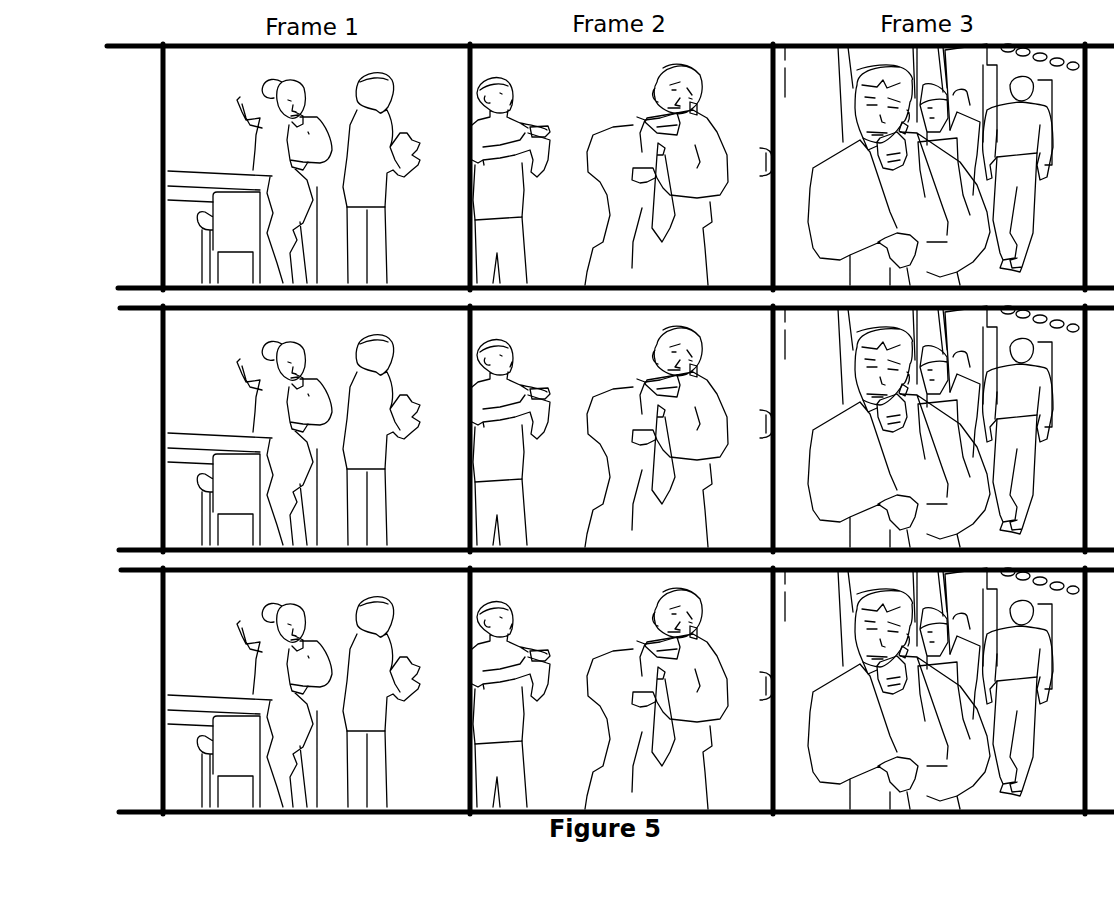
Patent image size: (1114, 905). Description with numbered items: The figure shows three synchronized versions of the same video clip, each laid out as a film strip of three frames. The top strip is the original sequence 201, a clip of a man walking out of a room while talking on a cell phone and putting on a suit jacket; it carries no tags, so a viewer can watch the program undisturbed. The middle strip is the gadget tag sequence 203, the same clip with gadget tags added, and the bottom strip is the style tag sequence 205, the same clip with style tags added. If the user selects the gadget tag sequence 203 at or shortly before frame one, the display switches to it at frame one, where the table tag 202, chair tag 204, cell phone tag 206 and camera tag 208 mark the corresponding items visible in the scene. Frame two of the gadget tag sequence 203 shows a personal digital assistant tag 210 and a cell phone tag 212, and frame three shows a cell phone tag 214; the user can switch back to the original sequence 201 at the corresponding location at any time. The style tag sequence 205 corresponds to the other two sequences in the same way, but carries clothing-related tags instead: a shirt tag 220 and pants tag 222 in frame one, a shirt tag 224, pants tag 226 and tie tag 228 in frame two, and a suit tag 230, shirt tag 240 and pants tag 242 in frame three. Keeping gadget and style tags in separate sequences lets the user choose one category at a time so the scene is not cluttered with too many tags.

The original sequence 201 is at (127, 58).
The gadget tag sequence 203 is at (127, 320).
The style tag sequence 205 is at (127, 582).
The table tag 202 is at (220, 427).
The chair tag 204 is at (228, 499).
The cell phone tag 206 is at (294, 432).
The camera tag 208 is at (400, 440).
The personal digital assistant (PDA) tag 210 is at (553, 363).
The cell phone tag 212 is at (701, 362).
The cell phone tag 214 is at (913, 422).
The shirt tag 220 is at (380, 664).
The pants tag 222 is at (399, 763).
The shirt tag 224 is at (525, 673).
The pants tag 226 is at (525, 774).
The tie tag 228 is at (692, 727).
The suit tag 230 is at (899, 732).
The shirt tag 240 is at (1018, 663).
The pants tag 242 is at (1033, 736).